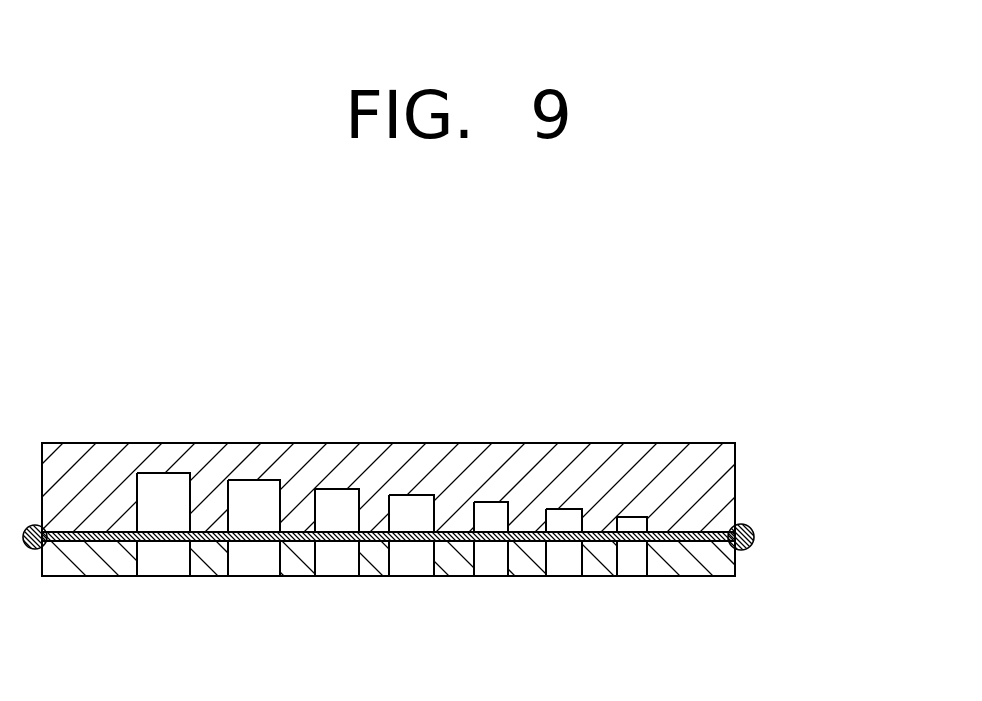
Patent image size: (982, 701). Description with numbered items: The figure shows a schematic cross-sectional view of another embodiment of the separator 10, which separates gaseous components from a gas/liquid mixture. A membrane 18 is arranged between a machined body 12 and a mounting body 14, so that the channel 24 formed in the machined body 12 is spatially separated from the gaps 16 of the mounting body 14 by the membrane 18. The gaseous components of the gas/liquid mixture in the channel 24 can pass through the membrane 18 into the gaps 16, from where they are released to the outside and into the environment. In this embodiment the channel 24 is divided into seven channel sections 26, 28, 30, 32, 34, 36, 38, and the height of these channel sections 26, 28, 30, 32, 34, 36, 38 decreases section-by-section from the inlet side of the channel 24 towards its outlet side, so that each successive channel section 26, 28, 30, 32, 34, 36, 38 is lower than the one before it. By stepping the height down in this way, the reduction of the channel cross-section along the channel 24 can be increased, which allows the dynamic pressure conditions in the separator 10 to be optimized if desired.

The separator 10 is at (783, 435).
The machined body 12 is at (88, 462).
The mounting body 14 is at (695, 536).
The gaps 16 is at (410, 556).
The membrane 18 is at (77, 538).
The channel 24 is at (250, 515).
The channel section 26 is at (165, 490).
The channel section 28 is at (252, 492).
The channel section 30 is at (338, 500).
The channel section 32 is at (412, 508).
The channel section 34 is at (490, 515).
The channel section 36 is at (561, 518).
The channel section 38 is at (632, 525).